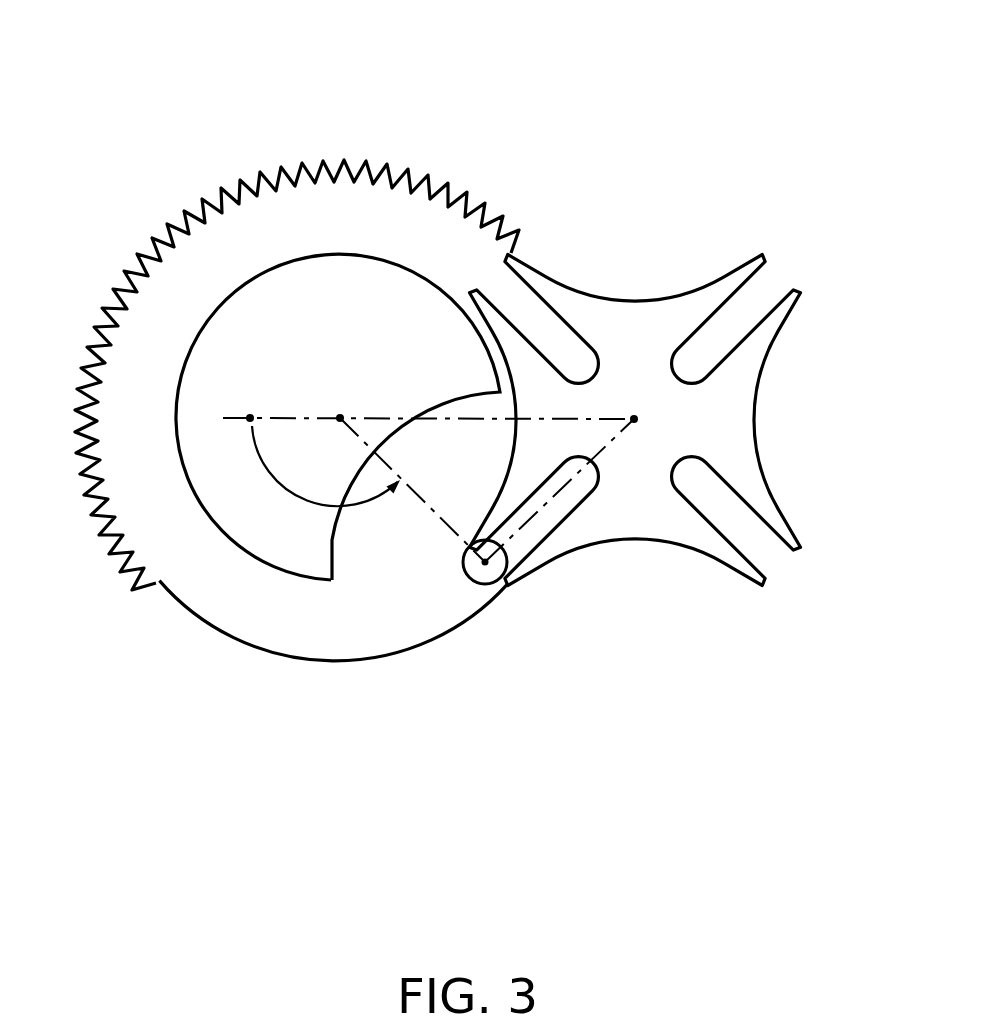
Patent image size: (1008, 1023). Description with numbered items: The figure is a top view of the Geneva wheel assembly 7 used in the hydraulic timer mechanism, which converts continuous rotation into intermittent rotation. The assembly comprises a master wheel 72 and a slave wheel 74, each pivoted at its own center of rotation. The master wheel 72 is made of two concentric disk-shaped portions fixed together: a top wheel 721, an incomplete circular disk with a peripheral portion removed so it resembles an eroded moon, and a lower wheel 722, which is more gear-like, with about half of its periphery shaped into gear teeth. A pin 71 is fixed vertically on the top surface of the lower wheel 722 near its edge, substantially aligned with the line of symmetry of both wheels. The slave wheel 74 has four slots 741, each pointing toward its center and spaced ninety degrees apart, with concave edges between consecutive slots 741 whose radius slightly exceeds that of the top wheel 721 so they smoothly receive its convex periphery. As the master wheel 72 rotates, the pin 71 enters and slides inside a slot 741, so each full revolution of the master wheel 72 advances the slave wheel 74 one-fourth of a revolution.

The Geneva wheel assembly 7 is at (338, 135).
The pin 71 is at (486, 582).
The master wheel 72 is at (333, 526).
The top wheel 721 is at (216, 510).
The lower wheel 722 is at (298, 617).
The slave wheel 74 is at (697, 423).
The slots 741 is at (733, 327).